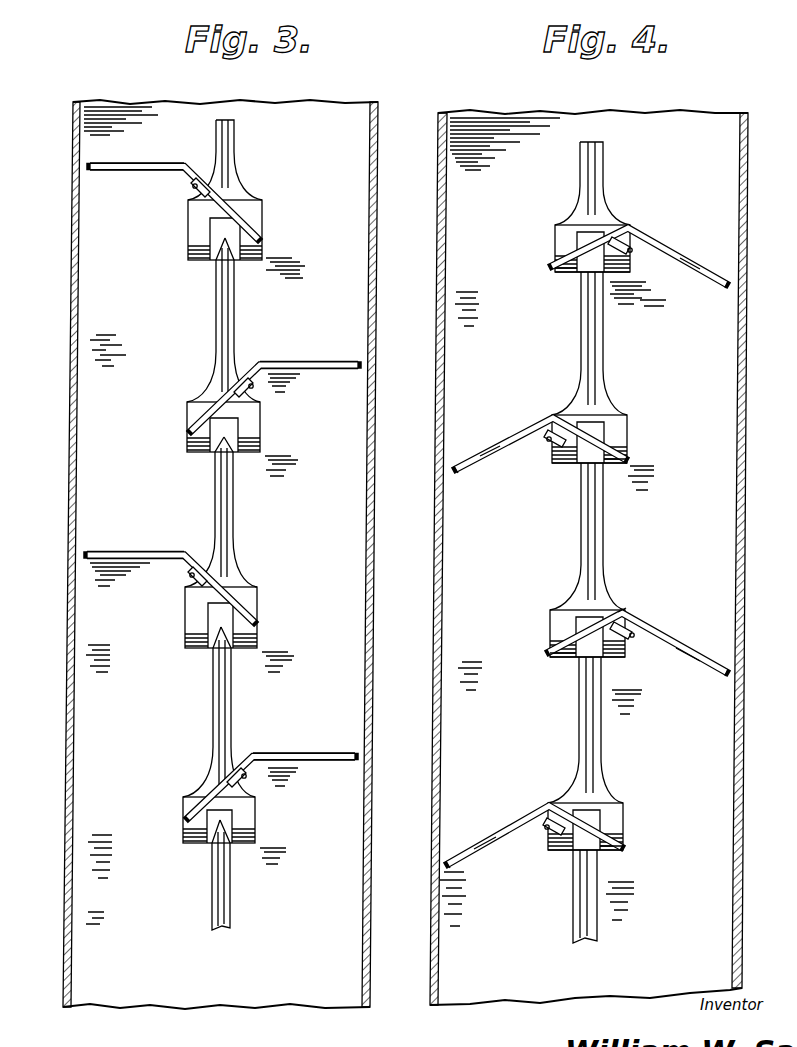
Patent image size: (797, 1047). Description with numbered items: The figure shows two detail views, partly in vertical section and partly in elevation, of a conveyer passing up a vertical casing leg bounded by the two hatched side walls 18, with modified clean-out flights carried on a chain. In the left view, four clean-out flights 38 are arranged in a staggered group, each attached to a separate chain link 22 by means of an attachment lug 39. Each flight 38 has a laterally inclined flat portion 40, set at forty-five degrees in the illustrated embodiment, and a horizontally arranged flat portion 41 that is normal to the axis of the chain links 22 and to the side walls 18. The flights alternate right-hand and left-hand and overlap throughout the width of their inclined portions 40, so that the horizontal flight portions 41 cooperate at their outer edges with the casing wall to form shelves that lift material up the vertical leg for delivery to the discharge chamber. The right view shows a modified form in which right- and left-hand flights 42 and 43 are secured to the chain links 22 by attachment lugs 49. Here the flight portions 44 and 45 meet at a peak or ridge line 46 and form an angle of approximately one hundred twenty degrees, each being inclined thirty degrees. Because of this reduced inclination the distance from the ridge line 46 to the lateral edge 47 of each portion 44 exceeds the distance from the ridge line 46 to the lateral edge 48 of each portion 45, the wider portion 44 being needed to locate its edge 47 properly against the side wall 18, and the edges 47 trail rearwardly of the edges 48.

In FIG. 3, the side wall 18 is at (70, 756).
In FIG. 4, the side wall 18 is at (438, 632).
In FIG. 3, the chain link 22 is at (214, 130).
In FIG. 4, the chain link 22 is at (606, 178).
In FIG. 3, the clean-out flight 38 is at (96, 178).
In FIG. 3, the attachment lug 39 is at (194, 190).
In FIG. 3, the laterally inclined flat portion 40 is at (242, 202).
In FIG. 3, the horizontally arranged flat portion 41 is at (148, 160).
In FIG. 4, the right-hand flight 42 is at (694, 281).
In FIG. 4, the left-hand flight 43 is at (494, 456).
In FIG. 4, the flight portion 44 is at (670, 250).
In FIG. 4, the flight portion 45 is at (570, 274).
In FIG. 4, the peak or ridge line 46 is at (624, 608).
In FIG. 4, the lateral edge 47 is at (729, 290).
In FIG. 4, the lateral edge 48 is at (553, 268).
In FIG. 4, the attachment lug 49 is at (632, 250).